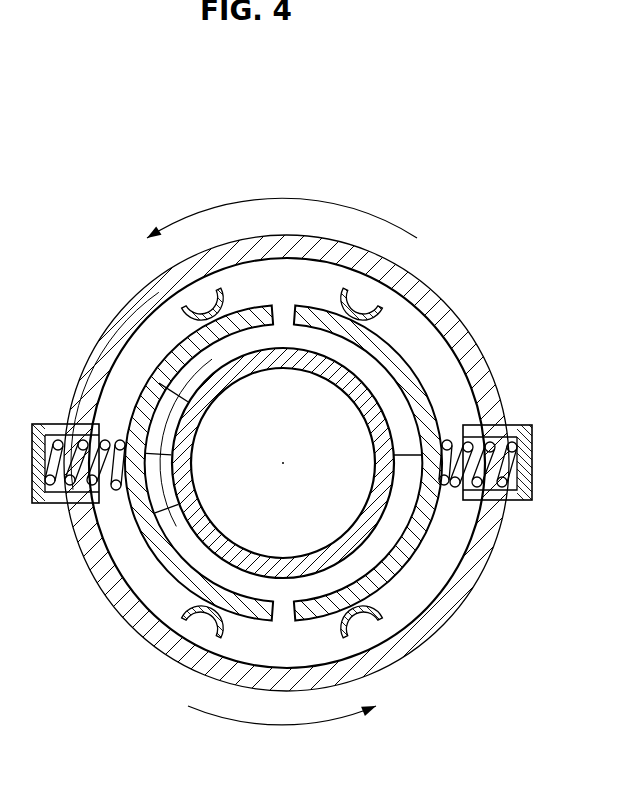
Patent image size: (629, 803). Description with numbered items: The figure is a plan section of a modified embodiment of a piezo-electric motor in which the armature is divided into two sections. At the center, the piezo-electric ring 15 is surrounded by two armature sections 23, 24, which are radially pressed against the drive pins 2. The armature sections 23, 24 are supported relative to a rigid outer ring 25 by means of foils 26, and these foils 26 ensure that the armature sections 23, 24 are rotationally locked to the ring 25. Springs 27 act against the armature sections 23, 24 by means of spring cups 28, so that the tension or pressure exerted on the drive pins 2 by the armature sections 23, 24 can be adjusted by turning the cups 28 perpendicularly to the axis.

The drive pins 2 is at (350, 341).
The piezo-electric ring 15 is at (380, 385).
The armature section 23 is at (185, 570).
The armature section 24 is at (405, 548).
The rigid outer ring 25 is at (395, 632).
The foils 26 is at (205, 645).
The springs 27 is at (505, 500).
The spring cups 28 is at (533, 450).